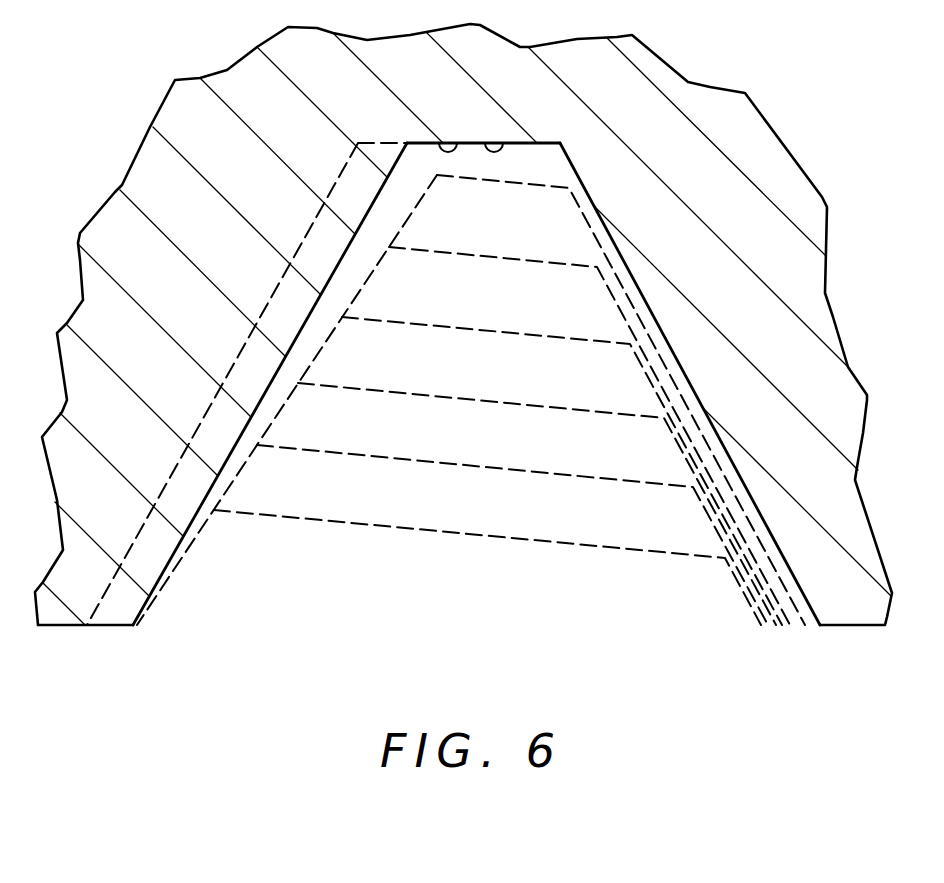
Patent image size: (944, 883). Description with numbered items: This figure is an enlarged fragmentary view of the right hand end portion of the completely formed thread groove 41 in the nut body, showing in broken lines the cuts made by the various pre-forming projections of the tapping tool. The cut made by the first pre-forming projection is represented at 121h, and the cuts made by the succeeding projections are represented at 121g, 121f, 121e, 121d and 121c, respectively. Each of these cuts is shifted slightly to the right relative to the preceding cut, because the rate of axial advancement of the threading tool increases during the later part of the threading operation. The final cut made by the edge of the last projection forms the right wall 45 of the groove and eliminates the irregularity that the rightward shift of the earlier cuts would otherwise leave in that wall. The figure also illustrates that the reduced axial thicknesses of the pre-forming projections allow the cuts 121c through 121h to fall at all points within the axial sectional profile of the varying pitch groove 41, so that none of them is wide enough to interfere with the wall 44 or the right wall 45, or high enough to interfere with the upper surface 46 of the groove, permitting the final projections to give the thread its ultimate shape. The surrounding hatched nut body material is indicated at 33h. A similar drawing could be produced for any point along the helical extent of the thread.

The body portion 33h is at (347, 162).
The wall 44 is at (405, 158).
The thread groove 41 is at (451, 147).
The upper surface 46 is at (507, 184).
The right wall 45 is at (590, 202).
The cut 121c is at (512, 170).
The cut 121d is at (453, 248).
The cut 121e is at (417, 318).
The cut 121f is at (393, 393).
The cut 121g is at (363, 458).
The cut 121h is at (350, 527).